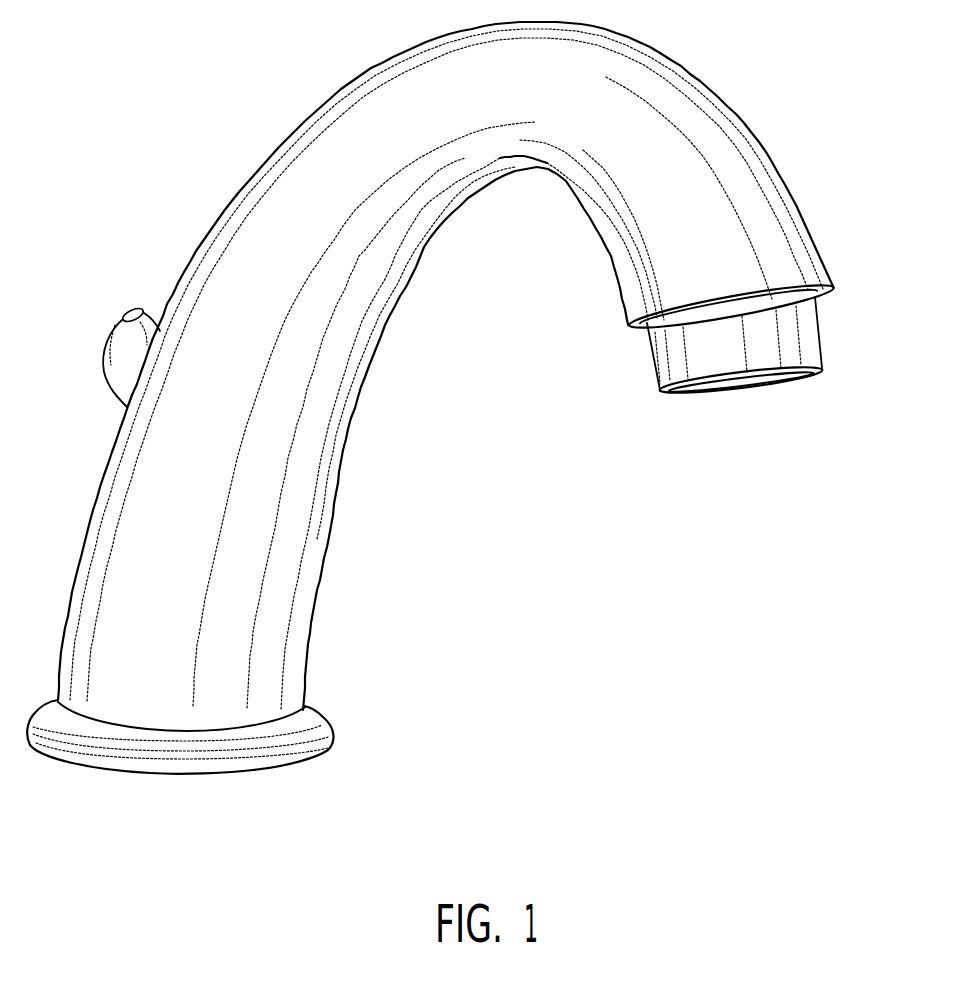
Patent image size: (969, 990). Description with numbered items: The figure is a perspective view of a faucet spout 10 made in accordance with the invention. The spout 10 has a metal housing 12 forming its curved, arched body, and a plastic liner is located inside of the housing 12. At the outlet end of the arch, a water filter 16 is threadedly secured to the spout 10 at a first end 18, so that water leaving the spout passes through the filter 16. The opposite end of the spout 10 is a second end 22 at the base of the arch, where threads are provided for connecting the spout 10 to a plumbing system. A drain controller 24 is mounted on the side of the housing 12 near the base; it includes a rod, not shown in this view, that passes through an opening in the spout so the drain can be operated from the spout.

The faucet spout 10 is at (463, 442).
The metal housing 12 is at (242, 183).
The water filter 16 is at (810, 350).
The first end 18 is at (832, 270).
The second end 22 is at (250, 782).
The drain controller 24 is at (108, 380).